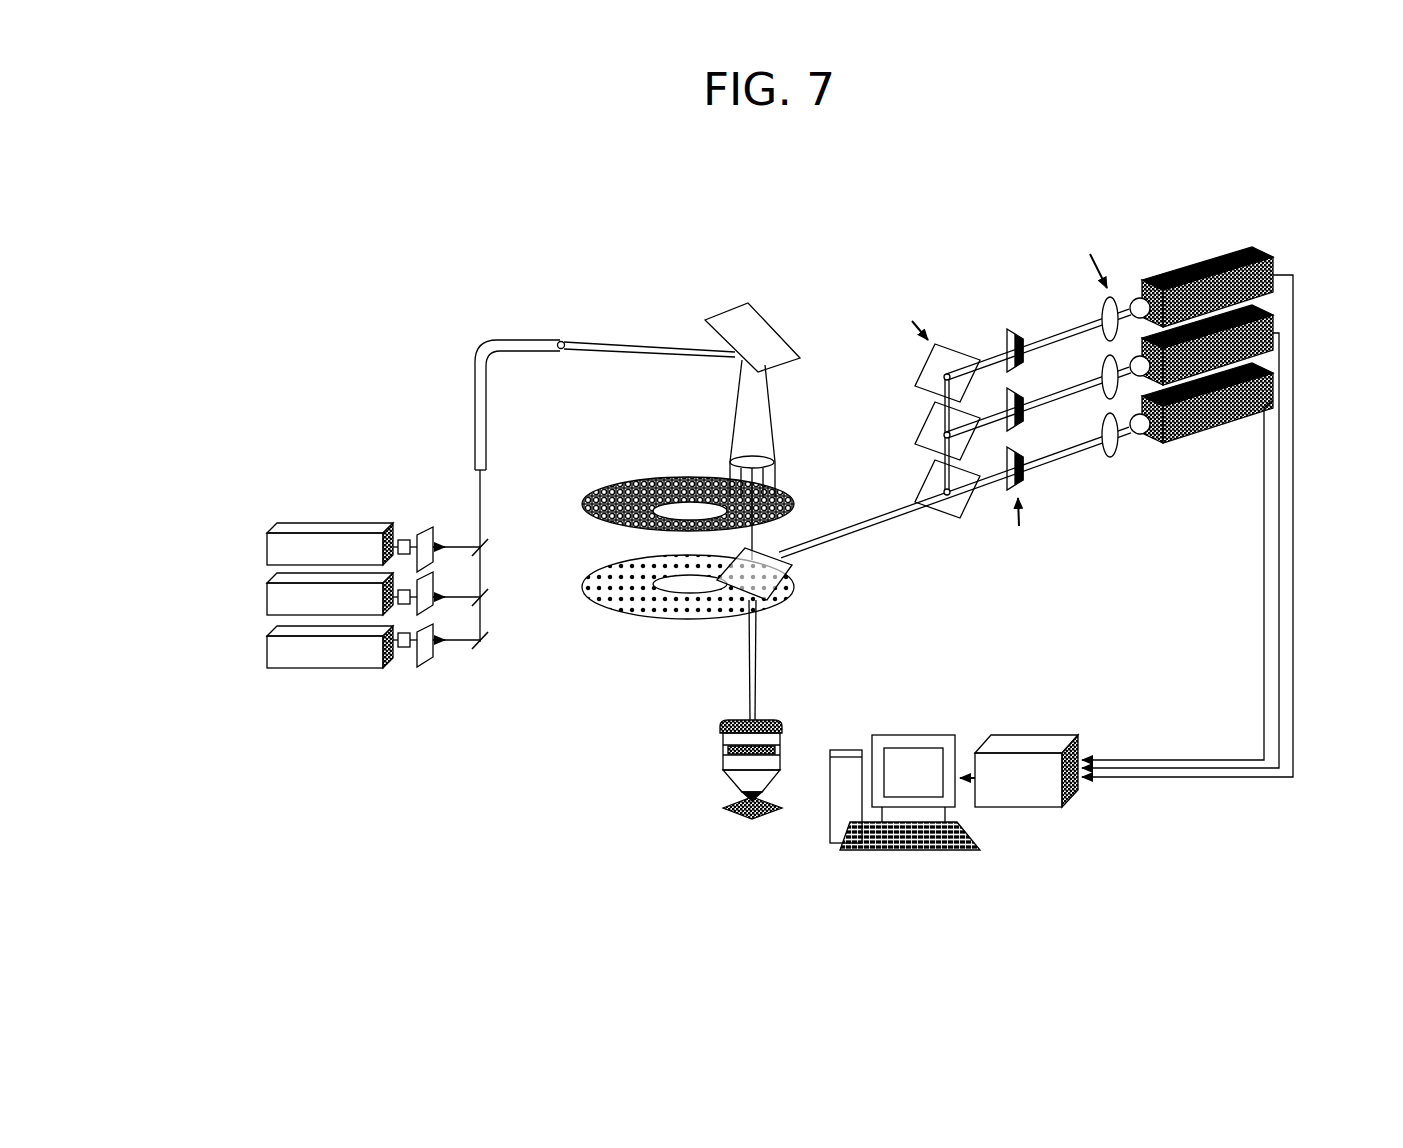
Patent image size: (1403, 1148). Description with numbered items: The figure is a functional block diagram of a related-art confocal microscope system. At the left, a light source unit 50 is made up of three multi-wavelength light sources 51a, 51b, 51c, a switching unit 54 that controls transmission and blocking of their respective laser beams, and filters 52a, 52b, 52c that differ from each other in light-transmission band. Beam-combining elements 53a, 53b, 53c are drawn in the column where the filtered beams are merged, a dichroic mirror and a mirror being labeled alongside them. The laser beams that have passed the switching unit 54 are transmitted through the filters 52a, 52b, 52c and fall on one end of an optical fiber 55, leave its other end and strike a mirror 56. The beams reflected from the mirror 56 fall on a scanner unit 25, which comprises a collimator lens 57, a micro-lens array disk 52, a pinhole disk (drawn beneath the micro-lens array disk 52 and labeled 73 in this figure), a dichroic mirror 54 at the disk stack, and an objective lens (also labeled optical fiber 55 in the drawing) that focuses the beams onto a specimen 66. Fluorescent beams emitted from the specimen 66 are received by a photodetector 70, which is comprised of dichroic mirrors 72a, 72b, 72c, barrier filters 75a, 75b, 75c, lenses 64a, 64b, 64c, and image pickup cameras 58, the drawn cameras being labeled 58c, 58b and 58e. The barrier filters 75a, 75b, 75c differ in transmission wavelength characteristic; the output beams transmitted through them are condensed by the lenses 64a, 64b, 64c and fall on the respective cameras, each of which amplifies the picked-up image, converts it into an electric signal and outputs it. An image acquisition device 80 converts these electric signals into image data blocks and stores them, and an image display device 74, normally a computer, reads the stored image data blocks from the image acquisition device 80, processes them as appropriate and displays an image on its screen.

The scanner unit 25 is at (612, 771).
The light source unit 50 is at (423, 530).
The multi-wavelength light source 51a is at (342, 544).
The multi-wavelength light source 51b is at (342, 594).
The multi-wavelength light source 51c is at (342, 647).
The micro-lens array disk 52 is at (660, 486).
The filter 52a is at (442, 536).
The filter 52b is at (451, 600).
The filter 52c is at (415, 656).
The dichroic mirror 53a is at (496, 539).
The dichroic mirror 53b is at (508, 624).
The mirror 53c is at (474, 652).
The switching unit 54 is at (792, 566).
The optical fiber 55 is at (478, 352).
The mirror 56 is at (735, 312).
The collimator lens 57 is at (768, 460).
The image pickup camera 58 is at (490, 650).
The image pickup camera 58c is at (1192, 287).
The image pickup camera 58b is at (1201, 345).
The image pickup camera 58e is at (1201, 414).
The lens 64a is at (1120, 446).
The lens 64b is at (1095, 383).
The lens 64c is at (1094, 326).
The specimen 66 is at (725, 812).
The photodetector 70 is at (961, 245).
The dichroic mirror 72a is at (949, 500).
The dichroic mirror 72b is at (931, 430).
The dichroic mirror 72c is at (931, 373).
The pinhole disk 73 is at (760, 606).
The image display device 74 is at (912, 735).
The barrier filter 75a is at (1035, 469).
The barrier filter 75b is at (1035, 410).
The barrier filter 75c is at (1035, 351).
The image acquisition device 80 is at (1020, 734).